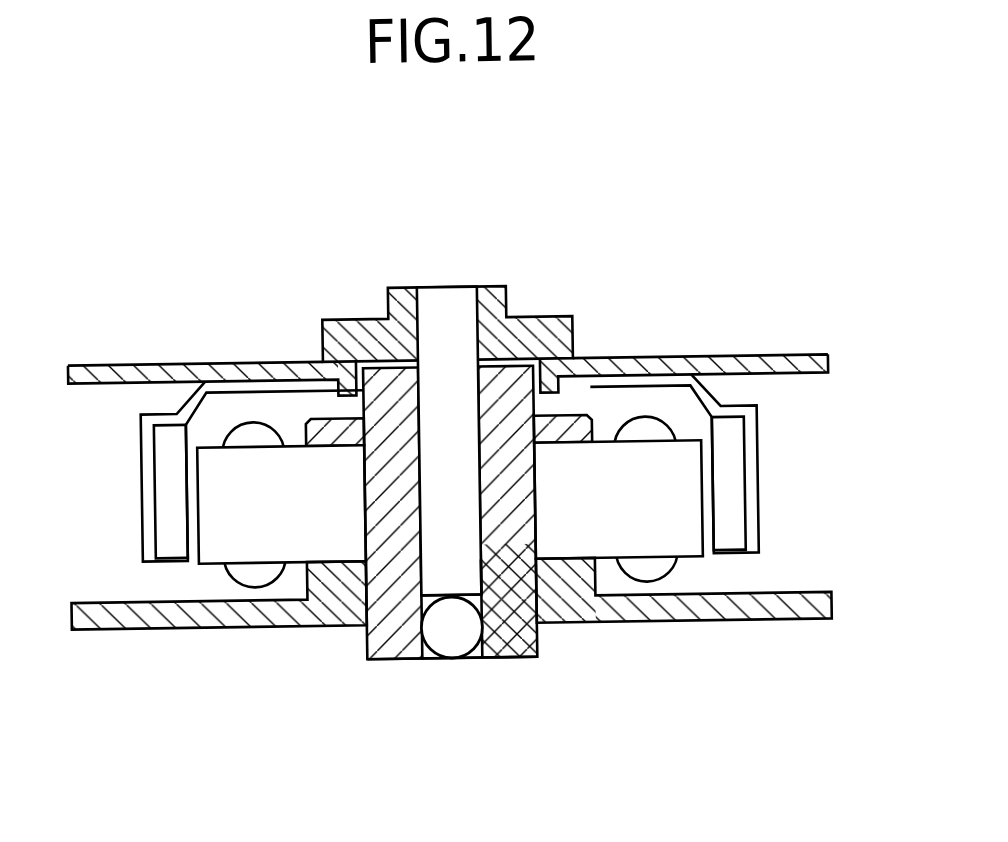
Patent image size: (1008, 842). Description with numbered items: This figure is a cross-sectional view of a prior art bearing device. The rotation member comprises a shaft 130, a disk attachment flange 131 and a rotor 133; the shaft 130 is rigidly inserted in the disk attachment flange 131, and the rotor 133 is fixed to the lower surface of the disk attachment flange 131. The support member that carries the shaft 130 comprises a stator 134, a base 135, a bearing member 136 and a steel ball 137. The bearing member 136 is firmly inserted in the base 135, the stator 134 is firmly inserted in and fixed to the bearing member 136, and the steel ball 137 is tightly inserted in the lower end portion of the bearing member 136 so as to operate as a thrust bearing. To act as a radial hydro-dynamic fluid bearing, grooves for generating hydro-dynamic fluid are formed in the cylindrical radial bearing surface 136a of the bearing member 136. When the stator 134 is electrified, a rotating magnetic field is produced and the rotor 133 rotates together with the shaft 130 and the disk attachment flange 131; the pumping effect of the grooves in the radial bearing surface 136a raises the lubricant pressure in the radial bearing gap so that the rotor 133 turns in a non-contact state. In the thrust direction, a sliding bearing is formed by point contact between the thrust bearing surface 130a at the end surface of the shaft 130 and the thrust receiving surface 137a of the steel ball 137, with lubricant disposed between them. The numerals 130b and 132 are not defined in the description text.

The shaft 130 is at (458, 287).
The thrust bearing surface 130a is at (537, 586).
The hub body 130b is at (492, 500).
The disk attachment flange 131 is at (556, 328).
The ball bearing 132 is at (584, 420).
The rotor 133 is at (736, 442).
The stator 134 is at (688, 494).
The base 135 is at (791, 598).
The bearing member 136 is at (506, 653).
The radial bearing surface 136a is at (451, 593).
The steel ball 137 is at (455, 645).
The thrust receiving surface 137a is at (410, 654).